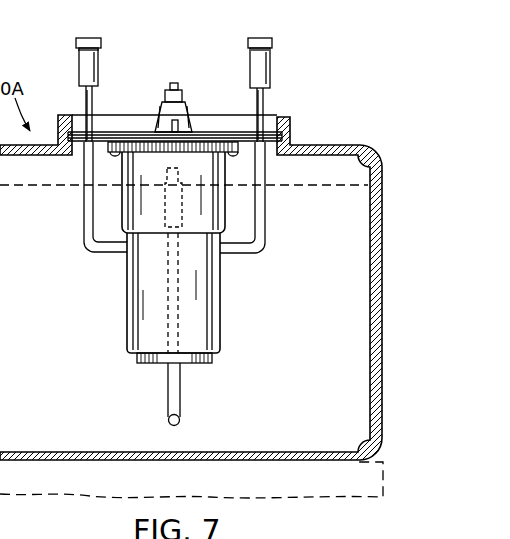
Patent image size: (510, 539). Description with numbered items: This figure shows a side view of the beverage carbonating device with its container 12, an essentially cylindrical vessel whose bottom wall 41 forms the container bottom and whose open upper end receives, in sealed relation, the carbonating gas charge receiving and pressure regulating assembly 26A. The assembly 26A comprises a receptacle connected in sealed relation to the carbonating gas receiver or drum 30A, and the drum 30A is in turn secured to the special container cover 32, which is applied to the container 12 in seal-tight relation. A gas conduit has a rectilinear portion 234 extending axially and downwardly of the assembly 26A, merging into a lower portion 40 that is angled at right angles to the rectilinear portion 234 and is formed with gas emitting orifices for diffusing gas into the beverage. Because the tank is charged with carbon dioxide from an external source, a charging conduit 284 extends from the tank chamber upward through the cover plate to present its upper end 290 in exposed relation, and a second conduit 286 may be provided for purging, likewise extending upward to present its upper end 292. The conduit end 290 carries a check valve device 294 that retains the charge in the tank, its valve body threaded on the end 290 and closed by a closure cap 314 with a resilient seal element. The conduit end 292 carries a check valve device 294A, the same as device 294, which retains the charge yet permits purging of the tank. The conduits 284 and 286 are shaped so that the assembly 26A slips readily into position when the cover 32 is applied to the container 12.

The container 12 is at (384, 264).
The container cover 32 is at (133, 112).
The closure cap 314 is at (88, 37).
The check valve device 294 is at (74, 68).
The check valve device 294A is at (274, 67).
The upper end of charging conduit 290 is at (94, 100).
The upper end of second conduit 292 is at (266, 98).
The charging conduit 284 is at (88, 207).
The second conduit 286 is at (266, 230).
The carbonating gas receiver or drum 30A is at (229, 200).
The carbonating gas charge receiving and pressure regulating assembly 26A is at (109, 311).
The rectilinear portion of conduit 234 is at (170, 383).
The lower portion of conduit 40 is at (167, 420).
The bottom wall 41 is at (287, 462).